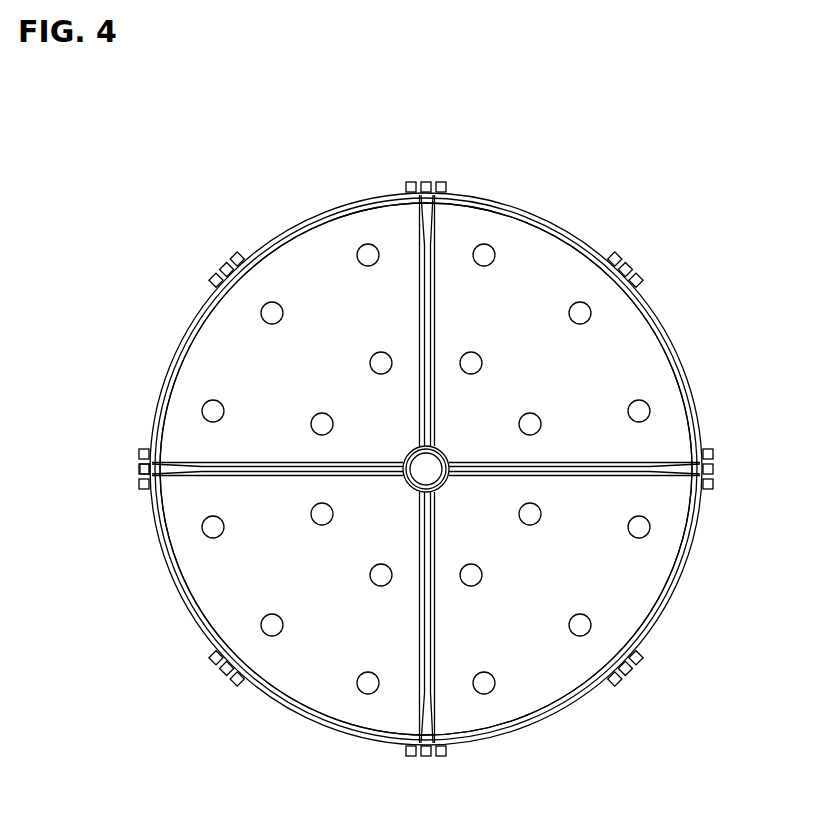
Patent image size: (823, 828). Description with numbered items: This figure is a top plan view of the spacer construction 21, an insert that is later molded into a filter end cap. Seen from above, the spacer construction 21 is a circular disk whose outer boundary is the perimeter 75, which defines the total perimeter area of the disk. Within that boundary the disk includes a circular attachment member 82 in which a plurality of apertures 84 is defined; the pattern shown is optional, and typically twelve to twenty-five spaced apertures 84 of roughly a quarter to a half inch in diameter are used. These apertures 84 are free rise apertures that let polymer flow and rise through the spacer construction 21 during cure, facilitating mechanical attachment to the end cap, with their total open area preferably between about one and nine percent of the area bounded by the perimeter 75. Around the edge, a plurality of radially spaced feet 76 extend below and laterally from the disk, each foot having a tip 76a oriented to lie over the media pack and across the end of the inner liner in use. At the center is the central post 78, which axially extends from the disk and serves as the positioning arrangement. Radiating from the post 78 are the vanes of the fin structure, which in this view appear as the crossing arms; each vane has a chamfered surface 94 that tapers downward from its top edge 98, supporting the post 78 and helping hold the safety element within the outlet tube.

The spacer construction 21 is at (251, 112).
The perimeter 75 is at (657, 333).
The feet 76 is at (630, 268).
The tips 76a is at (144, 466).
The central post 78 is at (446, 452).
The circular attachment member 82 is at (322, 240).
The apertures 84 is at (280, 320).
The chamfered surface 94 is at (692, 470).
The top edge 98 is at (433, 292).